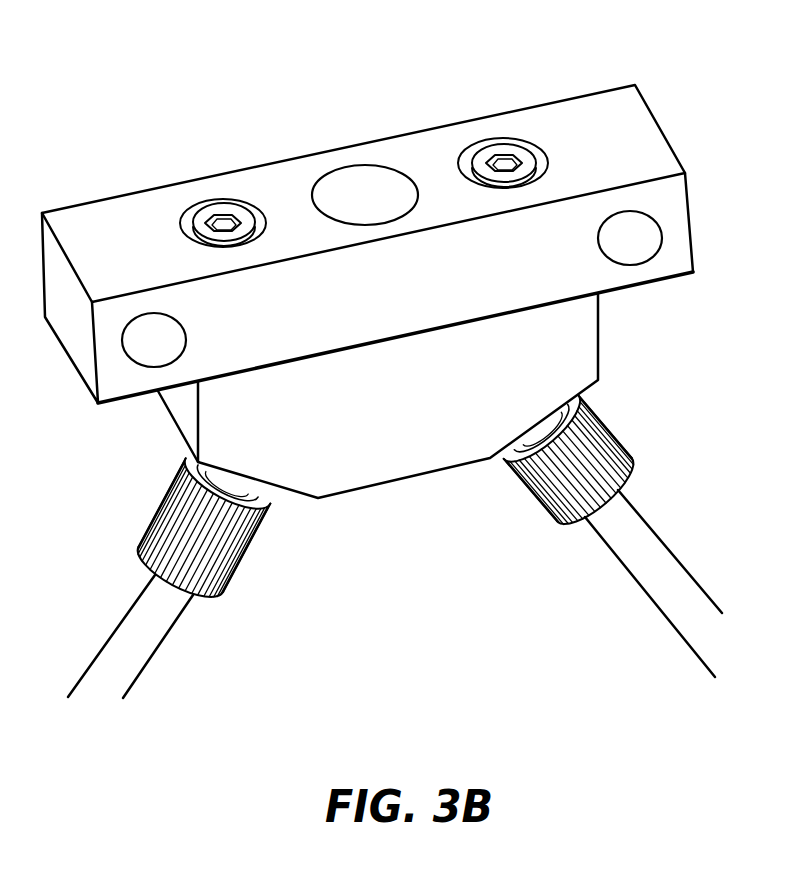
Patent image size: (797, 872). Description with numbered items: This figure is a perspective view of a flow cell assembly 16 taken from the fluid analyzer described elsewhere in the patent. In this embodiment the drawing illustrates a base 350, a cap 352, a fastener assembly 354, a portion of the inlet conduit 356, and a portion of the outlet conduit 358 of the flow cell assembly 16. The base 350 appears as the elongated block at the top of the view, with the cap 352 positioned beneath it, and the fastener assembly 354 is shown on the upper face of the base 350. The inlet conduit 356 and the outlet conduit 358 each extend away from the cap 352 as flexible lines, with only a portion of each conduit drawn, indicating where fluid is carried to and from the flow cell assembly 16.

The flow cell assembly 16 is at (346, 92).
The base 350 is at (642, 120).
The cap 352 is at (582, 335).
The fastener assembly 354 is at (507, 152).
The inlet conduit 356 is at (110, 615).
The outlet conduit 358 is at (651, 604).